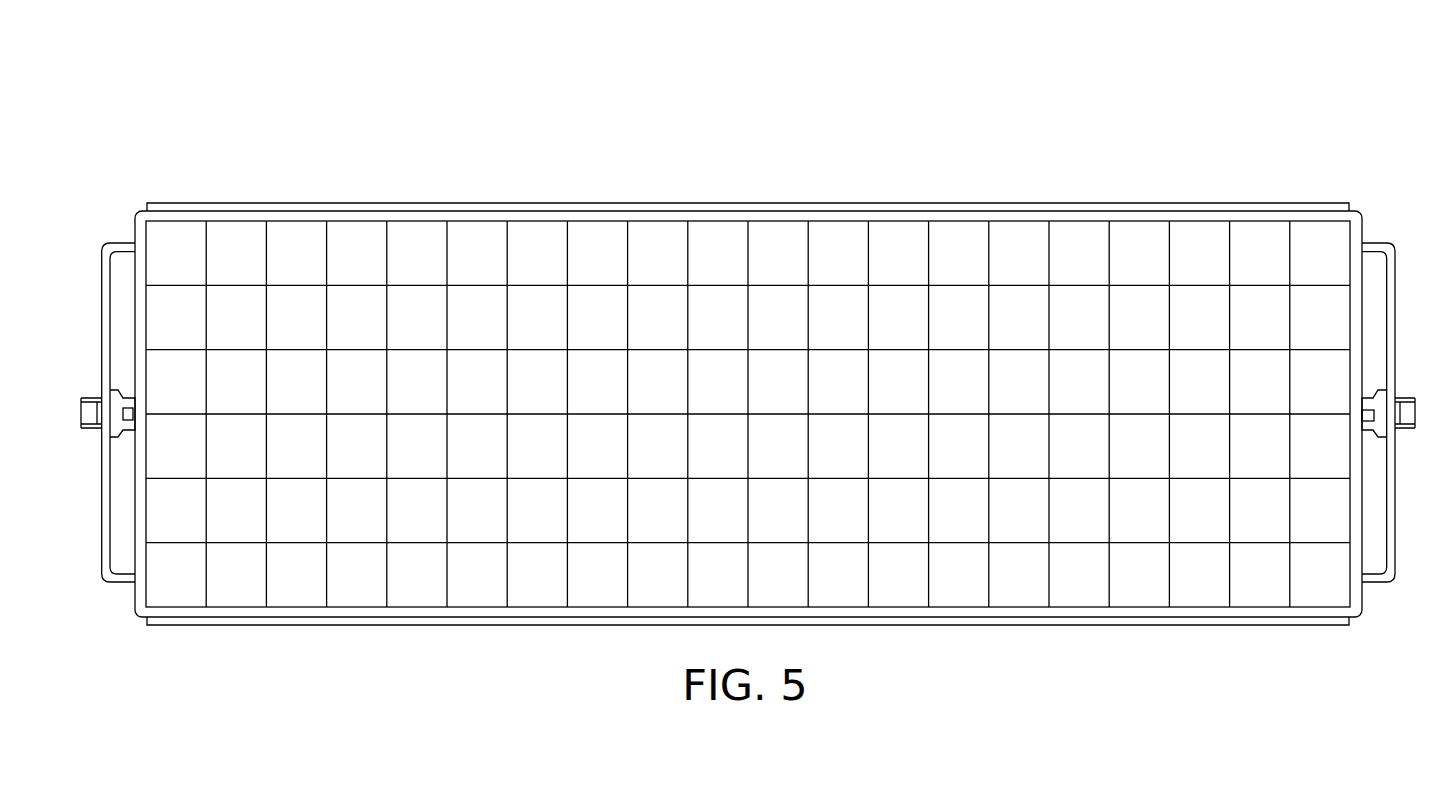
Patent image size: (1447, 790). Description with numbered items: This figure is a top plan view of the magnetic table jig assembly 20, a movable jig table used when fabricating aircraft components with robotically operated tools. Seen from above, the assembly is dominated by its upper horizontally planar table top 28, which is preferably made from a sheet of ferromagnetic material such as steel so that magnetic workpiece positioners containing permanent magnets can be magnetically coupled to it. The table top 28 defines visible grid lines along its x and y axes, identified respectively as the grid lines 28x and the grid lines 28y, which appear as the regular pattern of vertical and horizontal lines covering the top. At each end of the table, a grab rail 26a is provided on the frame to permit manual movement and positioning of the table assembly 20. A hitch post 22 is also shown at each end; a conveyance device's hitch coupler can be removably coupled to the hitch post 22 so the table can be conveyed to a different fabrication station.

The magnetic table jig assembly 20 is at (1136, 79).
The hitch post 22 is at (127, 430).
The grab rail 26a is at (123, 243).
The table top 28 is at (748, 403).
The grid lines along the x axis 28x is at (387, 256).
The grid lines along the y axis 28y is at (1192, 482).